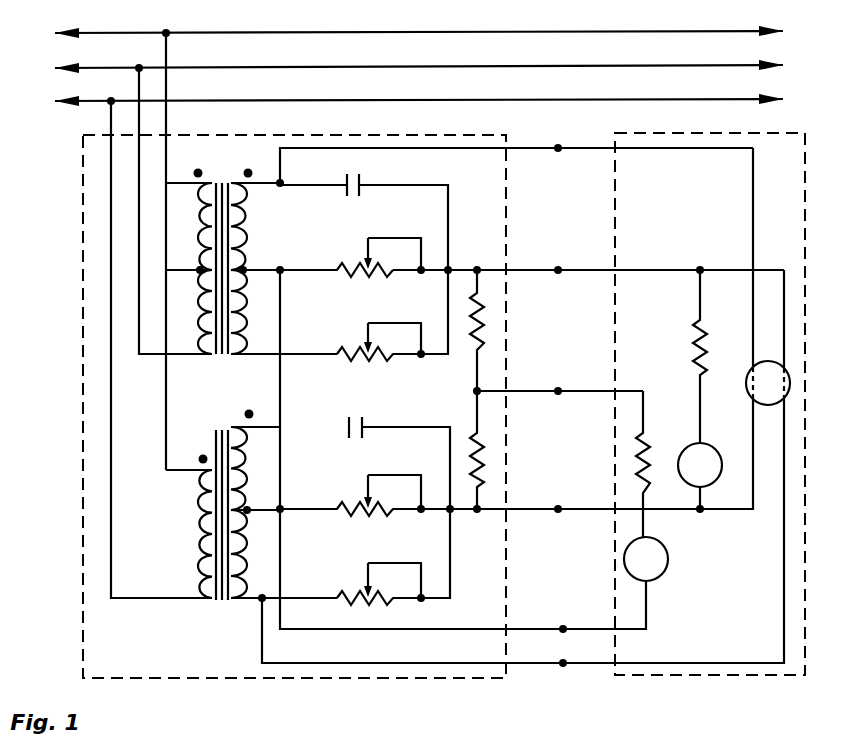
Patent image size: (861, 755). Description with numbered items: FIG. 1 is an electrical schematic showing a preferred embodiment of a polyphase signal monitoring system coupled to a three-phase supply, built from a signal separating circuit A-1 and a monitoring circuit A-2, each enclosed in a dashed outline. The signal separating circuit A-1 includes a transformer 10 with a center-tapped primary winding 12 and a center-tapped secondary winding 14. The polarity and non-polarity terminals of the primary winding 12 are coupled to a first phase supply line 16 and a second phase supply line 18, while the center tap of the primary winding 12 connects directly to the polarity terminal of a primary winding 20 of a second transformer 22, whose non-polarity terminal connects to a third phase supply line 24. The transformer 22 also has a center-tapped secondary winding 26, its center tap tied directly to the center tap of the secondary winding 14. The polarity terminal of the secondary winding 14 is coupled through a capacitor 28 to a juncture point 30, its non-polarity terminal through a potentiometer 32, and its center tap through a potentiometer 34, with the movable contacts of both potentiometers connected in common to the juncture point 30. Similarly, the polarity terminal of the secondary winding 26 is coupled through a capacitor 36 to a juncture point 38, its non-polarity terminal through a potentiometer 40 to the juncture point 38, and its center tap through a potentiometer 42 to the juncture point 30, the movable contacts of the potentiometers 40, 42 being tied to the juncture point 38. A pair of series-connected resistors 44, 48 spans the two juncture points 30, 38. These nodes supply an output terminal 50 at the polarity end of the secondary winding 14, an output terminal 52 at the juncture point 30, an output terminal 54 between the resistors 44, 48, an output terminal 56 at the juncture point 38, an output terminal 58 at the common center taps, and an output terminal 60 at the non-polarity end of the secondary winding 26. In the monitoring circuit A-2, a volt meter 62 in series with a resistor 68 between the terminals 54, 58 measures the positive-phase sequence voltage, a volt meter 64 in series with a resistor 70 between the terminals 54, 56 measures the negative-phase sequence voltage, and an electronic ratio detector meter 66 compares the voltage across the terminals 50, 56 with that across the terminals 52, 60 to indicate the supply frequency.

The transformer 10 is at (251, 254).
The primary winding 12 is at (212, 336).
The secondary winding 14 is at (240, 336).
The first phase supply line 16 is at (214, 33).
The second phase supply line 18 is at (262, 68).
The primary winding 20 is at (212, 600).
The transformer 22 is at (249, 518).
The third phase supply line 24 is at (300, 101).
The secondary winding 26 is at (255, 472).
The capacitor 28 is at (360, 180).
The juncture point 30 is at (450, 270).
The potentiometer 32 is at (369, 356).
The potentiometer 34 is at (369, 273).
The capacitor 36 is at (362, 430).
The juncture point 38 is at (479, 512).
The potentiometer 40 is at (369, 599).
The potentiometer 42 is at (370, 512).
The resistor 44 is at (480, 342).
The resistor 48 is at (482, 472).
The output terminal 50 is at (560, 150).
The output terminal 52 is at (562, 272).
The output terminal 54 is at (562, 393).
The output terminal 56 is at (562, 511).
The output terminal 58 is at (567, 625).
The output terminal 60 is at (565, 667).
The volt meter 62 is at (666, 575).
The volt meter 64 is at (710, 480).
The electronic ratio detector meter 66 is at (790, 376).
The resistor 68 is at (645, 432).
The resistor 70 is at (703, 335).
The signal separating circuit A-1 is at (327, 684).
The monitoring circuit A-2 is at (709, 684).